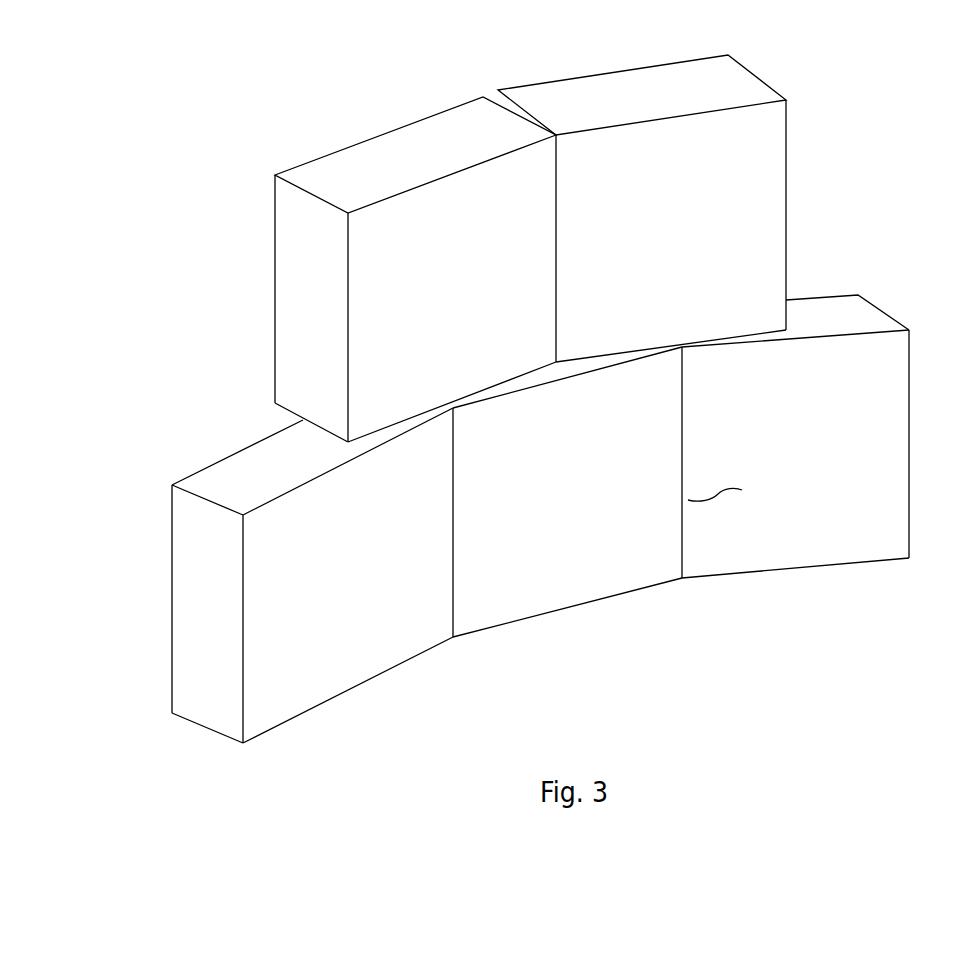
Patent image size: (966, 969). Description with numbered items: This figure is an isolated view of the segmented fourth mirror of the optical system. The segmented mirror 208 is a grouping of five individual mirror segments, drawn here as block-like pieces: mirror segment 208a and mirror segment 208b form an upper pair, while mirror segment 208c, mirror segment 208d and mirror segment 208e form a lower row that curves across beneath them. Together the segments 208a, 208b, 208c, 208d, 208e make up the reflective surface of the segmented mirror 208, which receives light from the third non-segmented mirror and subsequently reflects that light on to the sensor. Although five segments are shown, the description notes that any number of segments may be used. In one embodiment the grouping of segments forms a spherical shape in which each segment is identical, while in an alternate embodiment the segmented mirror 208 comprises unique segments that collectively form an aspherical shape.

The segmented mirror 208 is at (190, 236).
The mirror segment 208a is at (438, 282).
The mirror segment 208b is at (689, 246).
The mirror segment 208c is at (335, 594).
The mirror segment 208d is at (558, 508).
The mirror segment 208e is at (789, 486).